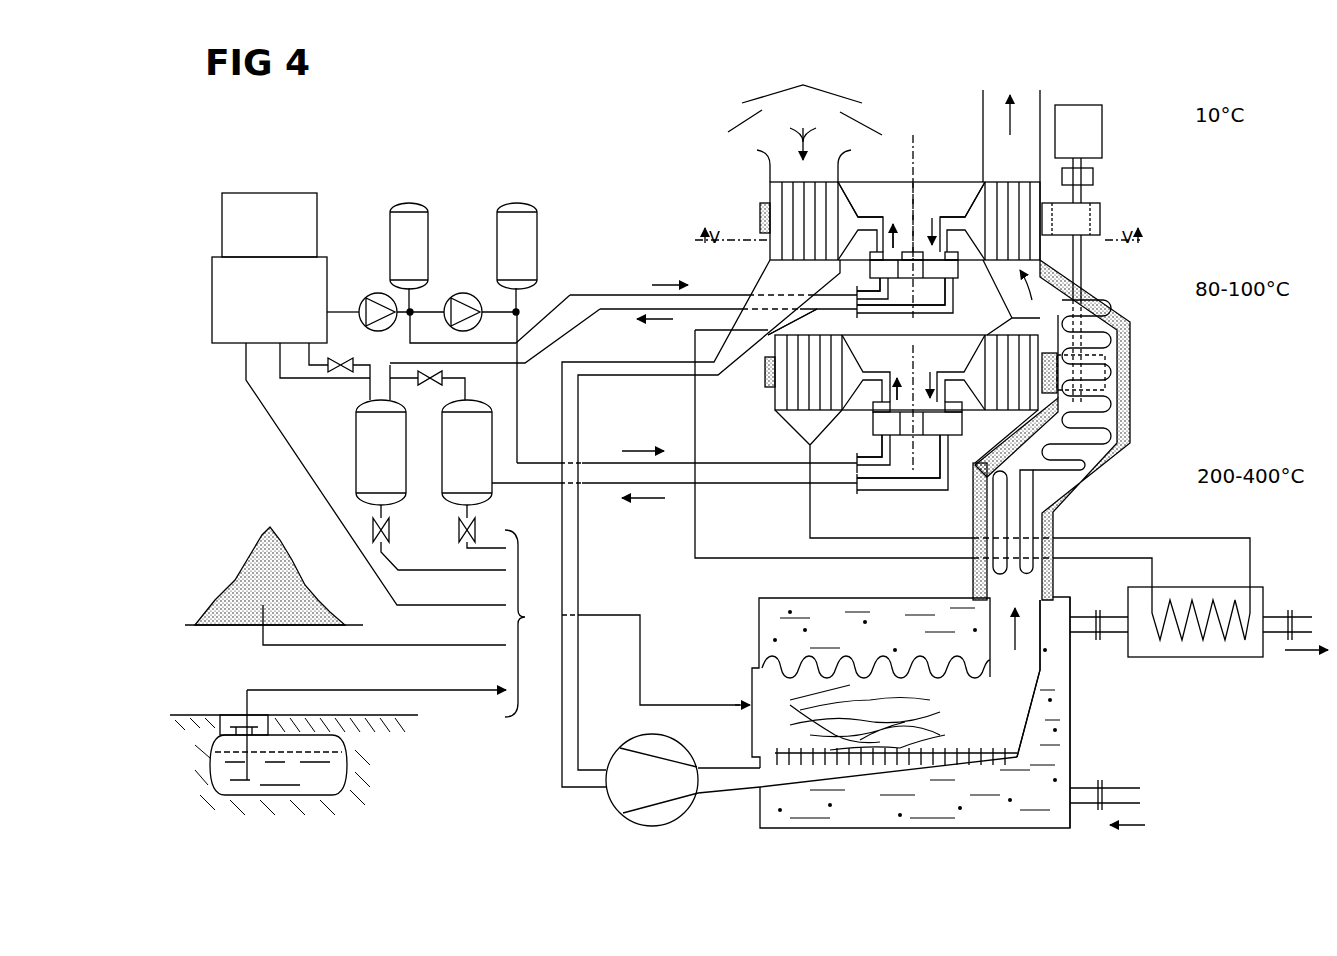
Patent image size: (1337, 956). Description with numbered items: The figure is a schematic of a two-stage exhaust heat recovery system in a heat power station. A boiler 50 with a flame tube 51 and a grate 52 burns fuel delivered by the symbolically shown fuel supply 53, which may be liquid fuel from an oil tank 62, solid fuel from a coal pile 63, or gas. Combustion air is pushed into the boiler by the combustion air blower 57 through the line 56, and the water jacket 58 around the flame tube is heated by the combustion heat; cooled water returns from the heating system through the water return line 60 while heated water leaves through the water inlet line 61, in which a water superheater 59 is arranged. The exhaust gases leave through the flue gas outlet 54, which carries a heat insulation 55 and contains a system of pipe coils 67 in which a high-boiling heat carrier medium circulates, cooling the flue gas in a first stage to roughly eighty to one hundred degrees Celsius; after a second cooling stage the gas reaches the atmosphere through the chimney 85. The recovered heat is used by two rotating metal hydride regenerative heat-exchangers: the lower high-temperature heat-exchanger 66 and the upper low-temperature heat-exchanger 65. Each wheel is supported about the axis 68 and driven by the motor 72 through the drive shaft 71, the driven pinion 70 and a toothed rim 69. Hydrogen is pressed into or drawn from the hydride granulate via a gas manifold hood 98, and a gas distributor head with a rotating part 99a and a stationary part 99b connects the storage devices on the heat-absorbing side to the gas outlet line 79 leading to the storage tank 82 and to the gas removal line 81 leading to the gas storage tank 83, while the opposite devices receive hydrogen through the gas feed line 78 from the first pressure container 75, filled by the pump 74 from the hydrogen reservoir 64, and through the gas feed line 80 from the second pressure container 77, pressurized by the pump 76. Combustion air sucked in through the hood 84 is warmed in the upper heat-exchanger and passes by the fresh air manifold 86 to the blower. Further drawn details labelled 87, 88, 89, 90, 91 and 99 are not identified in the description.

The boiler 50 is at (755, 612).
The flame tube 51 is at (923, 660).
The grate 52 is at (945, 758).
The fuel supply 53 is at (672, 700).
The flue gas outlet 54 is at (1040, 642).
The heat insulation 55 is at (1084, 492).
The line 56 is at (740, 795).
The combustion air blower 57 is at (612, 808).
The water jacket 58 is at (1068, 735).
The water superheater 59 is at (1198, 658).
The water return line 60 is at (1102, 785).
The water inlet line 61 is at (1292, 615).
The oil tank 62 is at (335, 780).
The coal pile 63 is at (248, 562).
The hydrogen reservoir 64 is at (212, 278).
The upper metal hydride regenerative heat-exchanger 65 is at (762, 186).
The lower metal hydride regenerative heat-exchanger 66 is at (770, 413).
The pipe coils 67 is at (1112, 428).
The axis 68 is at (913, 205).
The toothed rim 69 is at (758, 216).
The driven pinion 70 is at (1100, 210).
The drive shaft 71 is at (1083, 262).
The motor 72 is at (1102, 137).
The pump 74 is at (367, 296).
The first pressure container 75 is at (415, 204).
The pump 76 is at (468, 294).
The second pressure container 77 is at (526, 204).
The gas feed line 78 is at (567, 293).
The gas outlet line 79 is at (600, 307).
The gas feed line 80 is at (618, 438).
The gas removal line 81 is at (609, 485).
The storage tank 82 is at (356, 443).
The gas storage tank 83 is at (487, 496).
The hood 84 is at (767, 96).
The chimney 85 is at (983, 110).
The fresh air manifold 86 is at (755, 284).
The air duct 87 is at (1008, 290).
The duct 88 is at (778, 347).
The hopper 89 is at (797, 430).
The hood 90 is at (1000, 328).
The duct wall 91 is at (976, 420).
The gas manifold hood 98 is at (847, 208).
The outlet nozzle 99 is at (968, 200).
The rotating part 99a is at (903, 256).
The stationary part 99b is at (880, 284).